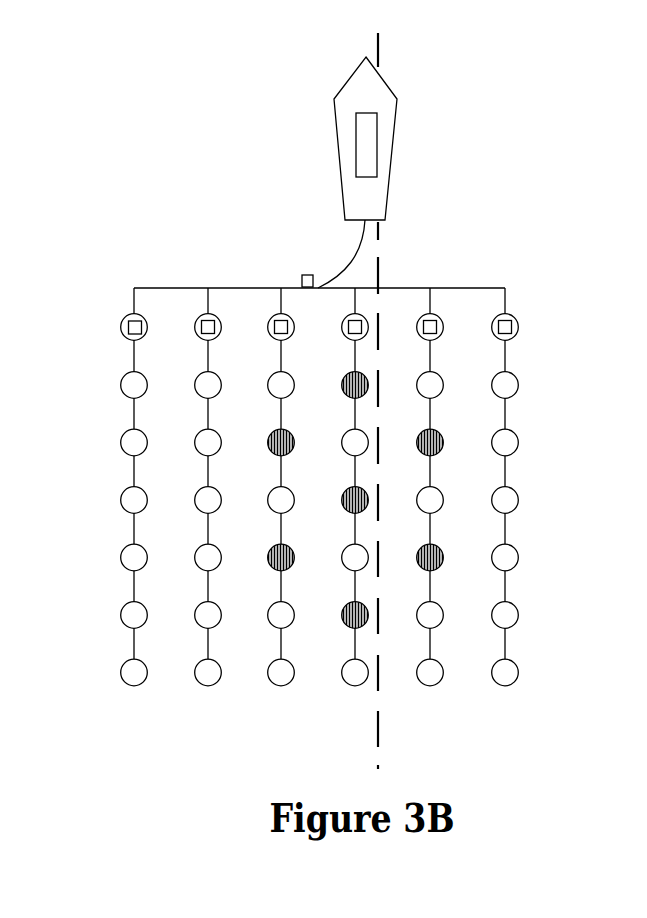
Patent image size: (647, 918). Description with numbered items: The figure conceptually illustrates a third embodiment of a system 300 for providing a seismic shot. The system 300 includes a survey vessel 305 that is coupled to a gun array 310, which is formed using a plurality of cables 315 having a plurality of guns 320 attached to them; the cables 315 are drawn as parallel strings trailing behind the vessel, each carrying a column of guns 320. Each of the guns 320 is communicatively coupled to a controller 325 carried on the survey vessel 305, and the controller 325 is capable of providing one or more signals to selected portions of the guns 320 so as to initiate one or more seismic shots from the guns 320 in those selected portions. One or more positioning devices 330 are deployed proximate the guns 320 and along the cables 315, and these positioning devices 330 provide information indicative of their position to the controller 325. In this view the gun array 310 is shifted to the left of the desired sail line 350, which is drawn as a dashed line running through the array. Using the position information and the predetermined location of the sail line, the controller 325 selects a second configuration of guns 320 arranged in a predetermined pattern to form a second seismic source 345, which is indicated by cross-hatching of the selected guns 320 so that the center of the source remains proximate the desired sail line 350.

The system 300 is at (480, 68).
The survey vessel 305 is at (345, 187).
The controller 325 is at (355, 135).
The positioning device 330 is at (305, 275).
The desired sail line 350 is at (381, 270).
The gun array 310 is at (556, 367).
The cable 315 is at (128, 588).
The gun 320 is at (118, 383).
The second seismic source 345 is at (441, 567).